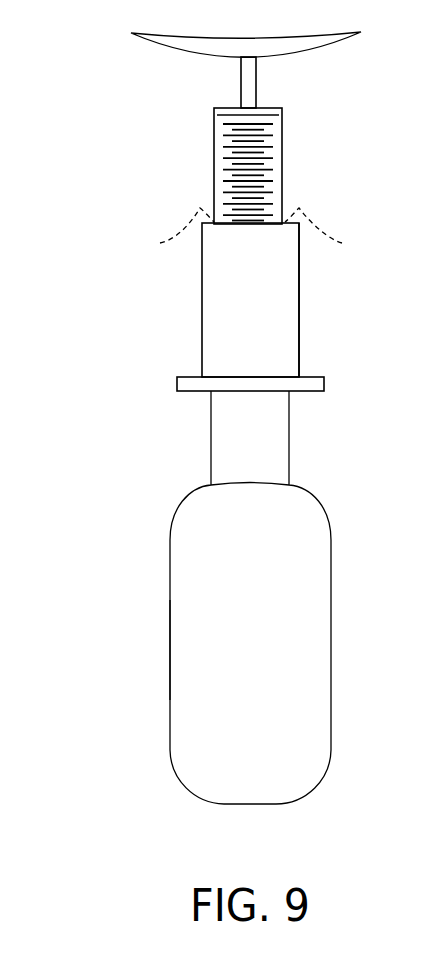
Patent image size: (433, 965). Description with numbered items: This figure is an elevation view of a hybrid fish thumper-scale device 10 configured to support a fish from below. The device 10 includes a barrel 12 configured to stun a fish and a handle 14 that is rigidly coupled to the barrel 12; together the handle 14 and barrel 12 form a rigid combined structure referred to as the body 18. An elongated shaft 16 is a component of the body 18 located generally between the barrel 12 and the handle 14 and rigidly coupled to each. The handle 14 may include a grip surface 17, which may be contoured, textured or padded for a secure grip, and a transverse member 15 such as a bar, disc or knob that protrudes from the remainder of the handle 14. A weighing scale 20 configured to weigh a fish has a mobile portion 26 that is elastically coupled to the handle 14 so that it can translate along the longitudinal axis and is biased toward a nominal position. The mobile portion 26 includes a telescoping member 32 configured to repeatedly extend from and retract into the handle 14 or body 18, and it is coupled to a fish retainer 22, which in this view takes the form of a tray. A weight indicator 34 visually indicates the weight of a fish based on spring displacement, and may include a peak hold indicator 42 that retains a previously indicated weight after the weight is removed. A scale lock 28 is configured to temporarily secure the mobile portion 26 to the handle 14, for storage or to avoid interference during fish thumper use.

The hybrid fish thumper-scale device 10 is at (100, 190).
The barrel 12 is at (170, 690).
The handle 14 is at (202, 308).
The transverse member 15 is at (324, 383).
The shaft 16 is at (211, 457).
The grip surface 17 is at (300, 318).
The body 18 is at (170, 633).
The weighing scale 20 is at (262, 102).
The fish retainer 22 is at (323, 49).
The mobile portion 26 is at (213, 121).
The scale lock 28 is at (330, 233).
The telescoping member 32 is at (214, 135).
The weight indicator 34 is at (224, 172).
The peak hold indicator 42 is at (170, 234).